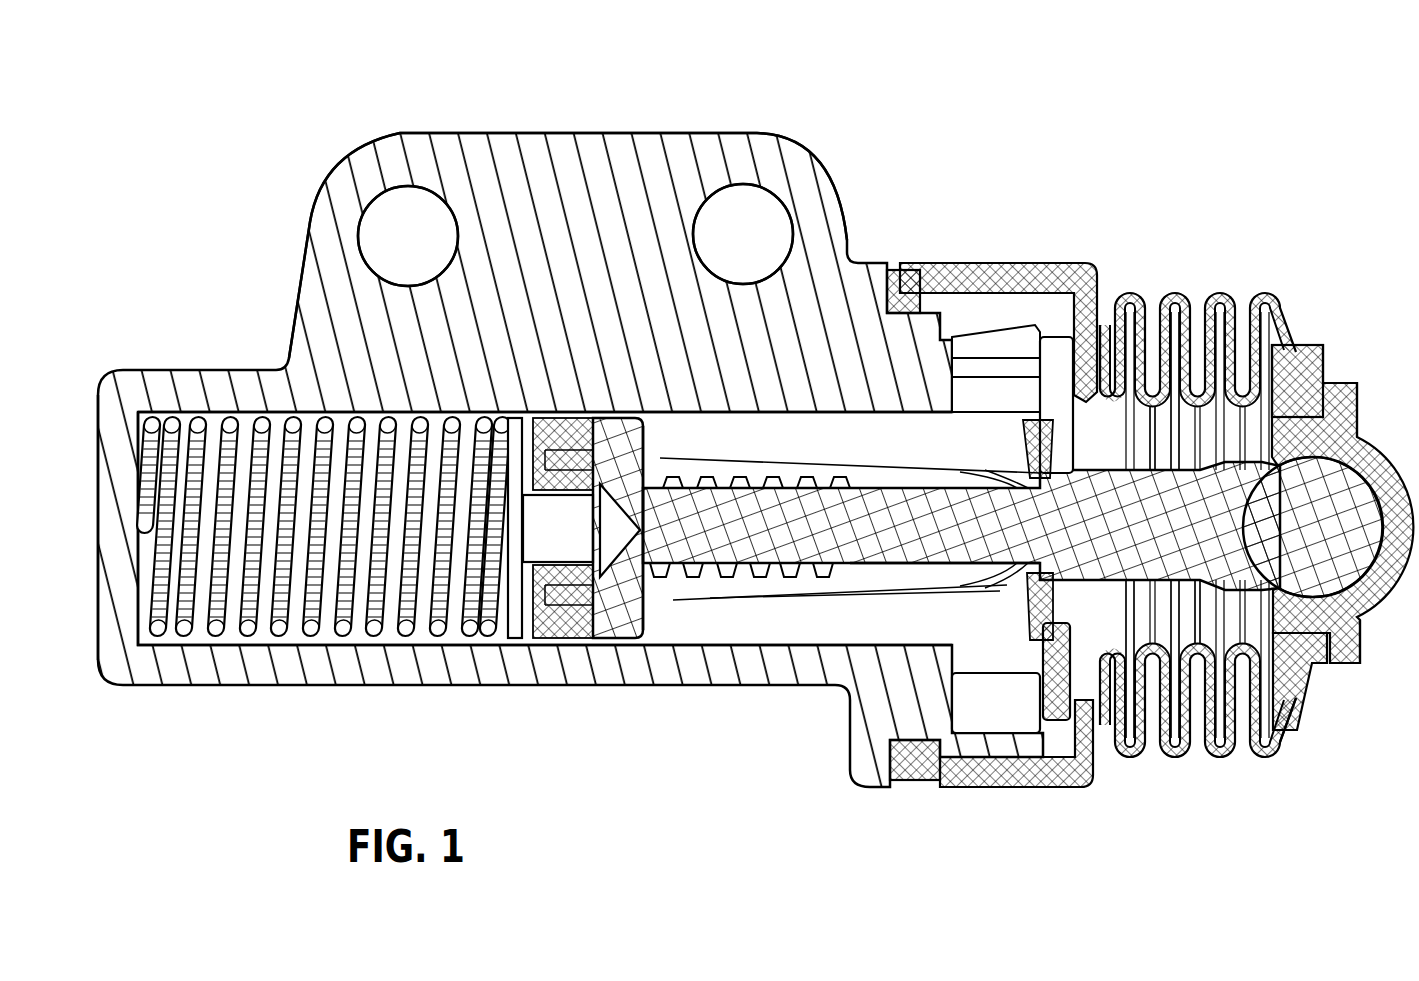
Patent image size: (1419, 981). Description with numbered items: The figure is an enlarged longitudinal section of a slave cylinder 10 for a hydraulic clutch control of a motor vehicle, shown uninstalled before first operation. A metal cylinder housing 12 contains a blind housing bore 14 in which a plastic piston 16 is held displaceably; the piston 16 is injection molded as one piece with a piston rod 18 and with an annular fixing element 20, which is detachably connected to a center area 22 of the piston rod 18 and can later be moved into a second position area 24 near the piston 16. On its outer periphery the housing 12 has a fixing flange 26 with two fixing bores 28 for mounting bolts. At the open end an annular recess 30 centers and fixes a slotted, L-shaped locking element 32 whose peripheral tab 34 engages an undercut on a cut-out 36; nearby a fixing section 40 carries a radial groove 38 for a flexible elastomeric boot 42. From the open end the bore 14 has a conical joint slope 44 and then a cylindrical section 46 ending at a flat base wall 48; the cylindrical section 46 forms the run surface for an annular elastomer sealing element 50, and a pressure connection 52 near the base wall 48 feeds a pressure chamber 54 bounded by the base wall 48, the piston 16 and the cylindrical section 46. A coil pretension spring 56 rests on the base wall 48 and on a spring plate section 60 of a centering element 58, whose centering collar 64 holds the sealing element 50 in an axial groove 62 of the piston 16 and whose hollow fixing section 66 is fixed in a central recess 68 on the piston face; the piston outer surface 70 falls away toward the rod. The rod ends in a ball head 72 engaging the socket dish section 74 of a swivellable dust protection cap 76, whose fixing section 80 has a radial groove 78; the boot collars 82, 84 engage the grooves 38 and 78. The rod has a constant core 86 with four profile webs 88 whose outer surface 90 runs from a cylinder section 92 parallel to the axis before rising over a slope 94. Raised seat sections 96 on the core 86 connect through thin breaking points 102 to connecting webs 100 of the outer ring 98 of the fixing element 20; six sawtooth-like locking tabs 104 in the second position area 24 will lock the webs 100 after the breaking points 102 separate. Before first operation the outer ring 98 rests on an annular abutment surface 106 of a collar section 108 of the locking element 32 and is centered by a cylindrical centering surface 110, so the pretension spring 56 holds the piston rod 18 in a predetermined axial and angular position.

The slave cylinder 10 is at (795, 128).
The cylinder housing 12 is at (287, 298).
The housing bore 14 is at (205, 420).
The piston 16 is at (610, 645).
The piston rod 18 is at (835, 580).
The fixing element 20 is at (1046, 420).
The center area 22 is at (1026, 462).
The second position area 24 is at (712, 486).
The fixing flange 26 is at (322, 206).
The fixing bores 28 is at (776, 198).
The annular recess 30 is at (1076, 320).
The locking element 32 is at (1040, 340).
The peripheral tab 34 is at (1010, 350).
The cut-out 36 is at (986, 335).
The radial groove 38 is at (905, 275).
The fixing section 40 is at (953, 280).
The boot 42 is at (1284, 312).
The conical joint slope 44 is at (1062, 790).
The cylindrical section 46 is at (694, 600).
The base wall 48 is at (122, 440).
The sealing element 50 is at (560, 645).
The pressure connection 52 is at (180, 640).
The pressure chamber 54 is at (205, 650).
The pretension spring 56 is at (250, 660).
The centering element 58 is at (525, 556).
The spring plate section 60 is at (537, 630).
The axial groove 62 is at (540, 660).
The centering collar 64 is at (548, 630).
The fixing section 66 is at (540, 503).
The central recess 68 is at (606, 541).
The outer surface 70 is at (640, 640).
The ball head 72 is at (1330, 495).
The socket dish section 74 is at (1356, 440).
The dust protection cap 76 is at (1358, 386).
The radial groove 78 is at (1300, 395).
The fixing section 80 is at (1362, 640).
The collar 82 is at (882, 742).
The collar 84 is at (1302, 690).
The core 86 is at (1160, 680).
The profile webs 88 is at (1230, 690).
The outer surface 90 is at (1197, 690).
The cylinder section 92 is at (1272, 702).
The slope 94 is at (830, 592).
The seat section 96 is at (1000, 582).
The outer ring 98 is at (998, 674).
The connecting webs 100 is at (1016, 600).
The breaking point 102 is at (1018, 588).
The locking tabs 104 is at (692, 582).
The abutment surface 106 is at (1052, 612).
The collar section 108 is at (1084, 395).
The centering surface 110 is at (1062, 650).